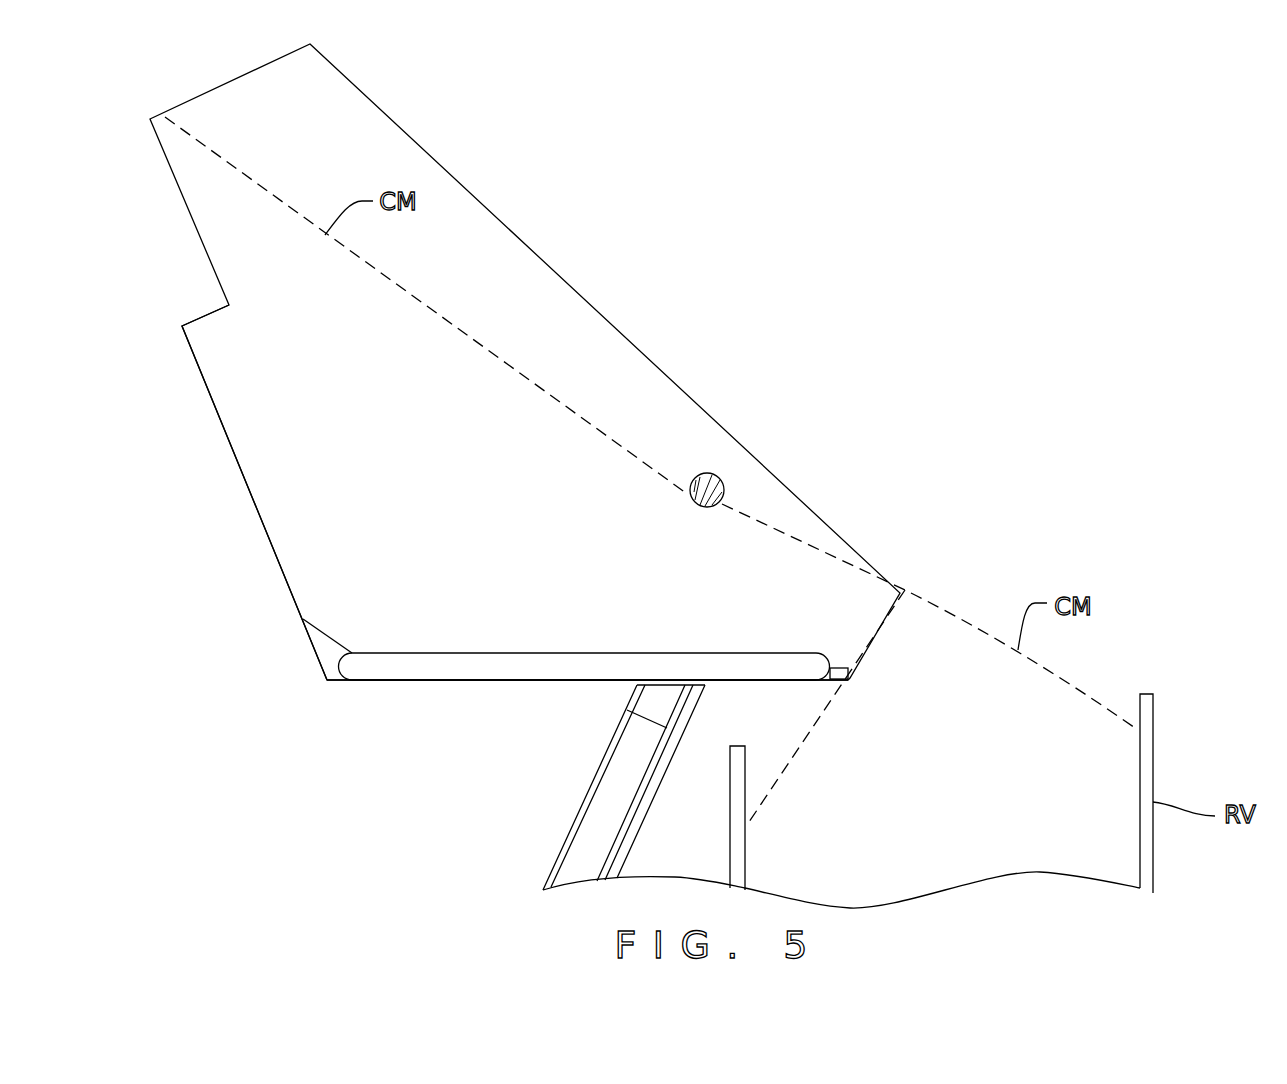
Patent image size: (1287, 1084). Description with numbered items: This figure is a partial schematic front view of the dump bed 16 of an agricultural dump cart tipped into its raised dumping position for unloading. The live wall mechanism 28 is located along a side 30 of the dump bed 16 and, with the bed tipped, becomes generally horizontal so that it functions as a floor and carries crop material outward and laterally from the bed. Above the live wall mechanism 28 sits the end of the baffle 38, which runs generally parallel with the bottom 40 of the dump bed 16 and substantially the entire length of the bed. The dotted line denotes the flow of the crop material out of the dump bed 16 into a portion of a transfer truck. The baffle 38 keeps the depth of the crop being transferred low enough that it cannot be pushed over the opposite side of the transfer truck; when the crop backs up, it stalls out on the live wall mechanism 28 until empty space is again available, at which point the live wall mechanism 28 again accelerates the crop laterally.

The dump bed 16 is at (698, 377).
The live wall mechanism 28 is at (507, 657).
The side 30 is at (440, 692).
The baffle 38 is at (700, 473).
The bottom 40 is at (261, 525).